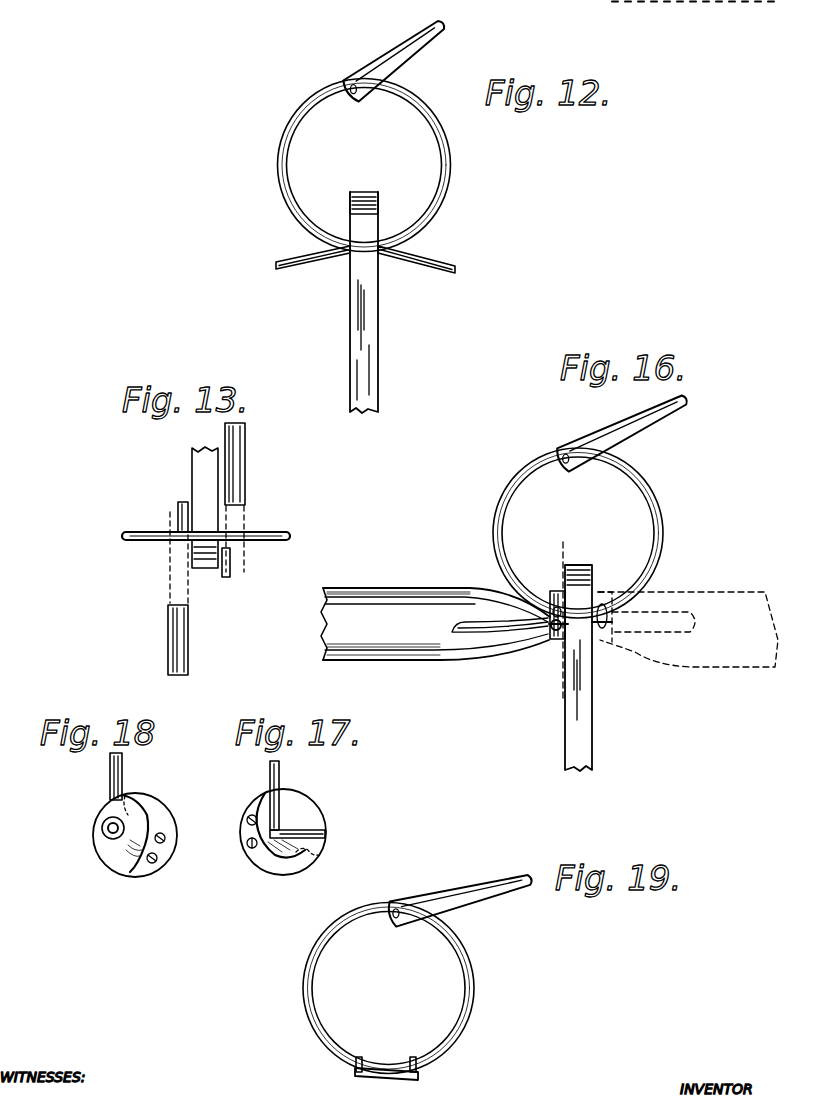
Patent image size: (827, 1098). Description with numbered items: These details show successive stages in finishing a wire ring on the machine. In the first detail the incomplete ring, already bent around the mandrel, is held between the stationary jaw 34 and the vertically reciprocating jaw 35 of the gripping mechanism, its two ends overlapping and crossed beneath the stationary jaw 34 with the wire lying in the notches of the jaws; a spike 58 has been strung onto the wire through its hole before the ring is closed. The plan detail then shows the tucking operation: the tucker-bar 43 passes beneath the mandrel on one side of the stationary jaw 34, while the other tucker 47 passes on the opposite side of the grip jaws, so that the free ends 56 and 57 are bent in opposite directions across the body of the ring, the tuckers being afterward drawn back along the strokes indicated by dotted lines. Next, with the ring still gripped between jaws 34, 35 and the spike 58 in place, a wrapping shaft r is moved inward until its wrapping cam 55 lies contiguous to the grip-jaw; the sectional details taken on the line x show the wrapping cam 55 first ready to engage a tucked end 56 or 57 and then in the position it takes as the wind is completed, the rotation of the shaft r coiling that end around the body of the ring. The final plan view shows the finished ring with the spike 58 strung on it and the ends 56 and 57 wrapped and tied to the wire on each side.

In FIG. 12, the stationary jaw 34 is at (362, 190).
In FIG. 13, the stationary jaw 34 is at (207, 567).
In FIG. 12, the vertically reciprocating jaw 35 is at (382, 302).
In FIG. 13, the vertically reciprocating jaw 35 is at (207, 489).
In FIG. 13, the tucker-bar 43 is at (252, 497).
In FIG. 13, the tucker 47 is at (194, 640).
In FIG. 16, the wrapping cam 55 is at (549, 589).
In FIG. 18, the wrapping cam 55 is at (145, 829).
In FIG. 17, the wrapping cam 55 is at (268, 832).
In FIG. 12, the tucked end 56 is at (432, 264).
In FIG. 13, the tucked end 56 is at (240, 575).
In FIG. 16, the tucked end 56 is at (606, 628).
In FIG. 18, the tucked end 56 is at (103, 820).
In FIG. 17, the tucked end 56 is at (349, 803).
In FIG. 19, the tucked end 56 is at (418, 1052).
In FIG. 12, the tucked end 57 is at (312, 272).
In FIG. 13, the tucked end 57 is at (160, 540).
In FIG. 16, the tucked end 57 is at (548, 632).
In FIG. 18, the tucked end 57 is at (72, 796).
In FIG. 17, the tucked end 57 is at (349, 803).
In FIG. 19, the tucked end 57 is at (381, 1056).
In FIG. 12, the spike 58 is at (393, 61).
In FIG. 16, the spike 58 is at (622, 434).
In FIG. 19, the spike 58 is at (460, 901).
In FIG. 16, the wrapping shaft r is at (435, 624).
In FIG. 18, the wrapping shaft r is at (77, 854).
In FIG. 17, the wrapping shaft r is at (332, 798).
In FIG. 16, the section line x is at (556, 623).